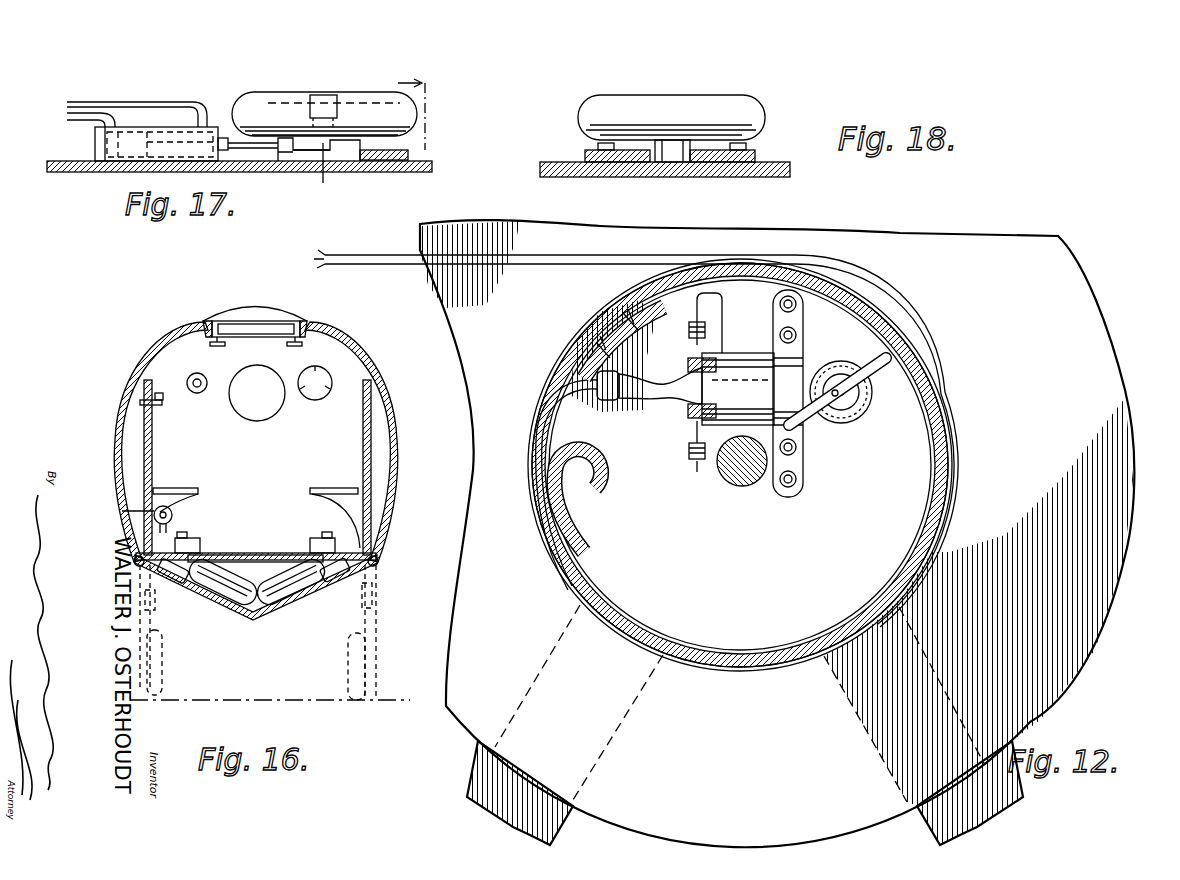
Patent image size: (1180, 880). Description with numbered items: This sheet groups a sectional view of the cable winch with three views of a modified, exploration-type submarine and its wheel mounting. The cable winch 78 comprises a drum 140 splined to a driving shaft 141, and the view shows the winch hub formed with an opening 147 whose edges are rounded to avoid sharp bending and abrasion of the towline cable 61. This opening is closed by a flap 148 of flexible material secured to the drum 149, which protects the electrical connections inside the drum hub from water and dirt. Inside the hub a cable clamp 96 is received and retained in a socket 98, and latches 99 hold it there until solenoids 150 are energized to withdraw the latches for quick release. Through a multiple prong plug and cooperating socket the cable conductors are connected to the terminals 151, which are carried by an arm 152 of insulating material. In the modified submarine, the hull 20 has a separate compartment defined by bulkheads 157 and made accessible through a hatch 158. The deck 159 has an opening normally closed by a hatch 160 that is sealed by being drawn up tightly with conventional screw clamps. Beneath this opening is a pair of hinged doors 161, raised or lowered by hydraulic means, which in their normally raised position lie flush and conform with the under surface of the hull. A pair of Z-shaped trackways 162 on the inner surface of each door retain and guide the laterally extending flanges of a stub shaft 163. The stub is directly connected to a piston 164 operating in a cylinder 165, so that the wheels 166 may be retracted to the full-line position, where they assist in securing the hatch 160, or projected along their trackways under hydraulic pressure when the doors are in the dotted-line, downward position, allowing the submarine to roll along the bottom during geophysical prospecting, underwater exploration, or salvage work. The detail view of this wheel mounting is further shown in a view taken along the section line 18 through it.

In FIG. 17, the section line 18— 18 is at (383, 138).
In FIG. 16, the hull 20 is at (276, 441).
In FIG. 12, the towline cable 61 is at (552, 541).
In FIG. 12, the cable winch 78 is at (1098, 325).
In FIG. 12, the cable clamp 96 is at (634, 402).
In FIG. 12, the socket 98 is at (724, 358).
In FIG. 12, the latches 99 is at (700, 421).
In FIG. 12, the drum 140 is at (934, 540).
In FIG. 12, the driving shaft 141 is at (748, 486).
In FIG. 12, the opening 147 is at (576, 366).
In FIG. 12, the flap 148 is at (540, 428).
In FIG. 12, the drum 149 is at (609, 322).
In FIG. 12, the solenoids 150 is at (692, 336).
In FIG. 12, the terminals 151 is at (888, 364).
In FIG. 12, the arm 152 is at (872, 384).
In FIG. 16, the bulkheads 157 is at (177, 390).
In FIG. 16, the hatch 158 is at (240, 322).
In FIG. 16, the deck 159 is at (374, 532).
In FIG. 16, the hatch 160 is at (267, 558).
In FIG. 17, the hinged doors 161 is at (392, 172).
In FIG. 18, the hinged doors 161 is at (768, 176).
In FIG. 16, the hinged doors 161 is at (346, 575).
In FIG. 17, the Z-shaped trackways 162 is at (410, 154).
In FIG. 18, the Z-shaped trackways 162 is at (722, 158).
In FIG. 17, the stub shaft 163 is at (346, 172).
In FIG. 18, the stub shaft 163 is at (672, 158).
In FIG. 17, the piston 164 is at (235, 140).
In FIG. 17, the cylinder 165 is at (100, 172).
In FIG. 16, the cylinder 165 is at (167, 576).
In FIG. 17, the wheels 166 is at (404, 112).
In FIG. 18, the wheels 166 is at (752, 112).
In FIG. 16, the wheels 166 is at (282, 598).